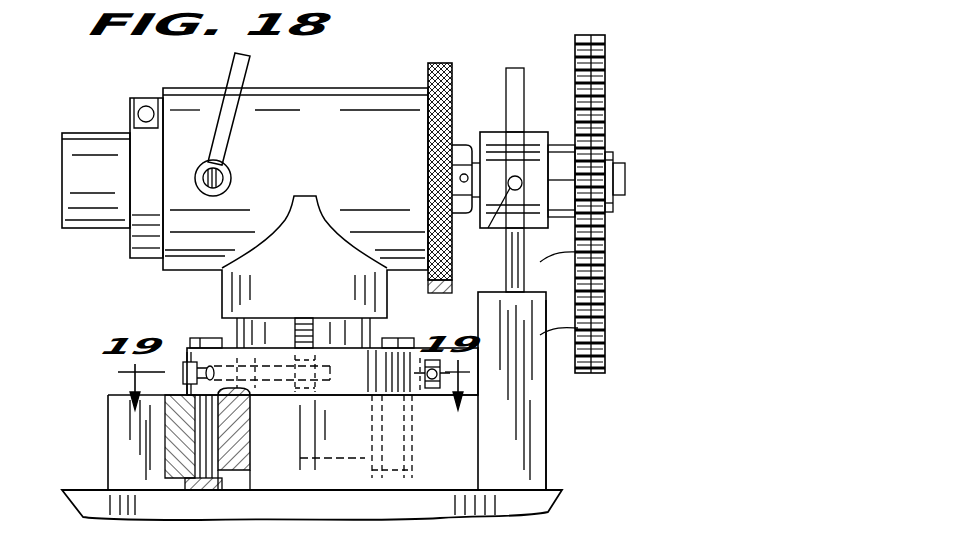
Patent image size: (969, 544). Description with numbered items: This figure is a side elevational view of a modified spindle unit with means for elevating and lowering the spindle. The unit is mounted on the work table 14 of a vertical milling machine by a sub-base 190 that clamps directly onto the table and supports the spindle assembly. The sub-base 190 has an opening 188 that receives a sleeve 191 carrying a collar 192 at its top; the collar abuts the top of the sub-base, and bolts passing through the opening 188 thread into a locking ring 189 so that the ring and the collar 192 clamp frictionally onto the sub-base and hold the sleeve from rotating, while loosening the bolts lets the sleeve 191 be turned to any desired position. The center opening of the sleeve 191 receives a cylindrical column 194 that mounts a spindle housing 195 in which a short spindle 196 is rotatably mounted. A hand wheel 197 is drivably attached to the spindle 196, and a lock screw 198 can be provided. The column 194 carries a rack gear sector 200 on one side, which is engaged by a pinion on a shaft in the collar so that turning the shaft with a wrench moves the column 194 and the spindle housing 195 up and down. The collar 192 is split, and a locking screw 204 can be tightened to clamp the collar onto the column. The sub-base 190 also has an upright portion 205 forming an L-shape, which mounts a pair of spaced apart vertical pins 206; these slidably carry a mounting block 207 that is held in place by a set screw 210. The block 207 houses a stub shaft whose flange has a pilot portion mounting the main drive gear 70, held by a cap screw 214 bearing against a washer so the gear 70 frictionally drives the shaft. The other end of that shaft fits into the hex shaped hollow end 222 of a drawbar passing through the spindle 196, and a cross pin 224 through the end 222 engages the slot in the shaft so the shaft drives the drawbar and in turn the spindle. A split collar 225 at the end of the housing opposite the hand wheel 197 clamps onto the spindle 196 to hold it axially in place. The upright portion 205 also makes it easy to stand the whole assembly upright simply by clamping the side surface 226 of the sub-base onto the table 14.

The work table 14 is at (78, 490).
The main drive gear 70 is at (608, 55).
The opening 188 is at (220, 488).
The locking ring 189 is at (200, 490).
The sub-base 190 is at (535, 410).
The sleeve 191 is at (178, 345).
The collar 192 is at (380, 346).
The cylindrical column 194 is at (260, 335).
The spindle housing 195 is at (182, 95).
The spindle 196 is at (84, 142).
The hand wheel 197 is at (446, 62).
The lock screw 198 is at (233, 178).
The rack gear sector 200 is at (318, 342).
The locking screw 204 is at (657, 531).
The upright portion 205 is at (594, 338).
The vertical pins 206 is at (594, 256).
The mounting block 207 is at (532, 132).
The set screw 210 is at (492, 216).
The cap screw 214 is at (625, 180).
The hex shaped hollow end 222 is at (460, 145).
The cross pin 224 is at (460, 178).
The split collar 225 is at (138, 243).
The side surface 226 is at (547, 455).